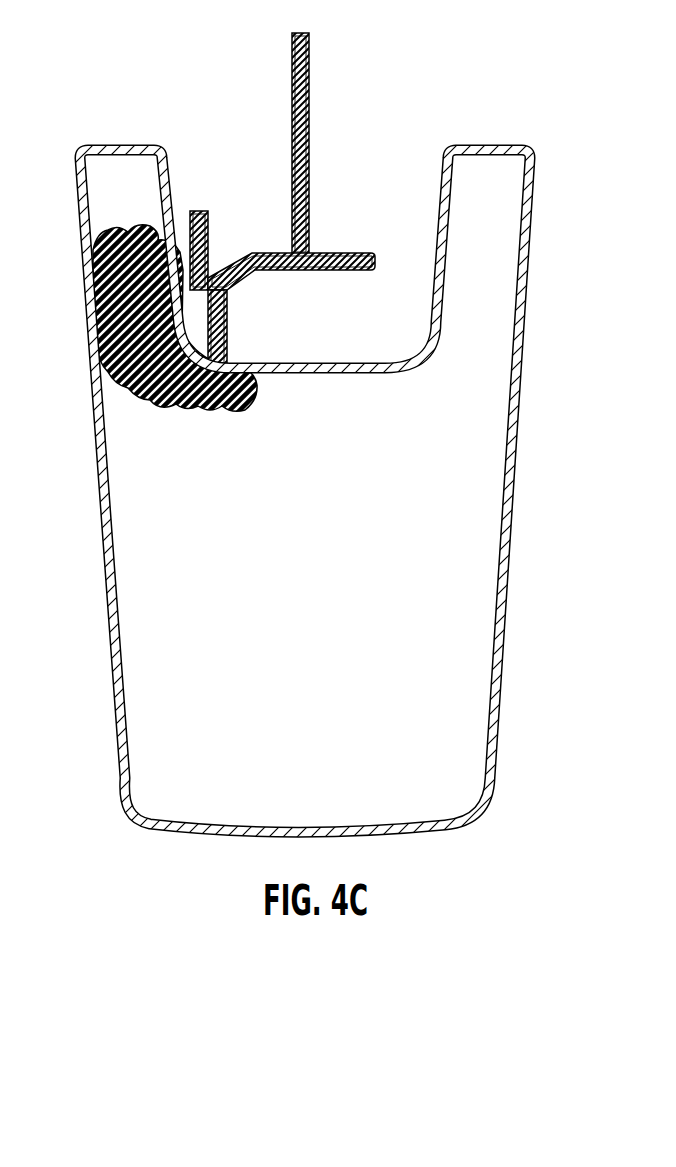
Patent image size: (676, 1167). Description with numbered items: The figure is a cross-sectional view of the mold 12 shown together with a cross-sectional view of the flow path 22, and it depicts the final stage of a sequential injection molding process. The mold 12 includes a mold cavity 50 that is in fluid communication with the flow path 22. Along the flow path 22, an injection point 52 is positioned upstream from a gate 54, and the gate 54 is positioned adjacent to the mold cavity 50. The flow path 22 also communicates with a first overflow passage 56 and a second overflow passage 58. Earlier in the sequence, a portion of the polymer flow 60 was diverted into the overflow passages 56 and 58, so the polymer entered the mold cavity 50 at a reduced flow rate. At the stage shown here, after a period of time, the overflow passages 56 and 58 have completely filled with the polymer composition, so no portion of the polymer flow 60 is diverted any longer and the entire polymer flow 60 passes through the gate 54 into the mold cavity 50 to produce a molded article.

The mold 12 is at (102, 578).
The flow path 22 is at (277, 273).
The mold cavity 50 is at (466, 572).
The injection point 52 is at (302, 222).
The gate 54 is at (249, 352).
The first overflow passage 56 is at (292, 79).
The second overflow passage 58 is at (209, 222).
The polymer flow 60 is at (330, 262).